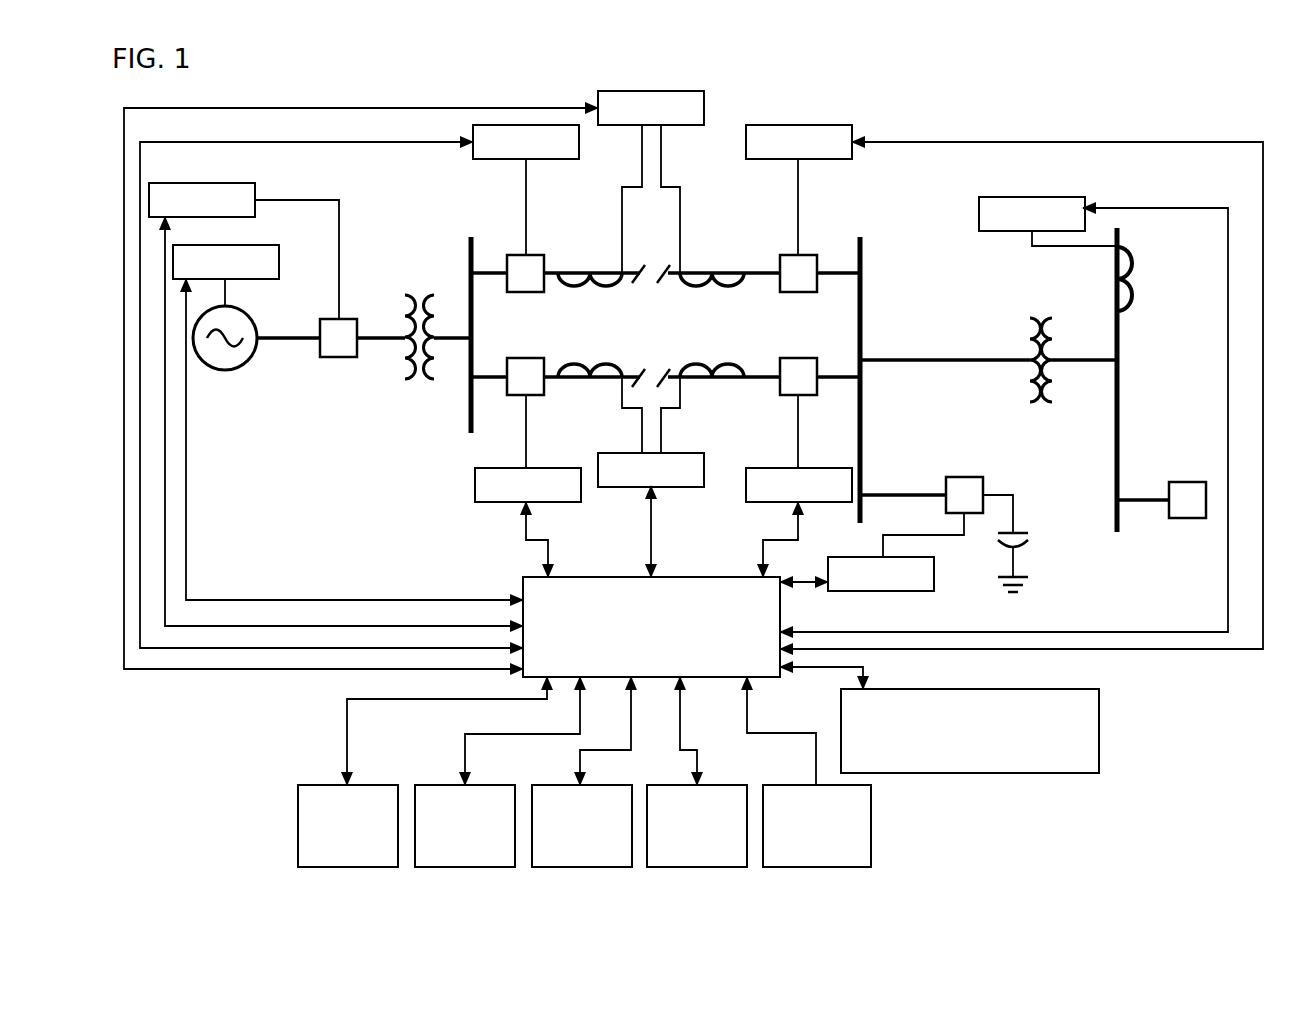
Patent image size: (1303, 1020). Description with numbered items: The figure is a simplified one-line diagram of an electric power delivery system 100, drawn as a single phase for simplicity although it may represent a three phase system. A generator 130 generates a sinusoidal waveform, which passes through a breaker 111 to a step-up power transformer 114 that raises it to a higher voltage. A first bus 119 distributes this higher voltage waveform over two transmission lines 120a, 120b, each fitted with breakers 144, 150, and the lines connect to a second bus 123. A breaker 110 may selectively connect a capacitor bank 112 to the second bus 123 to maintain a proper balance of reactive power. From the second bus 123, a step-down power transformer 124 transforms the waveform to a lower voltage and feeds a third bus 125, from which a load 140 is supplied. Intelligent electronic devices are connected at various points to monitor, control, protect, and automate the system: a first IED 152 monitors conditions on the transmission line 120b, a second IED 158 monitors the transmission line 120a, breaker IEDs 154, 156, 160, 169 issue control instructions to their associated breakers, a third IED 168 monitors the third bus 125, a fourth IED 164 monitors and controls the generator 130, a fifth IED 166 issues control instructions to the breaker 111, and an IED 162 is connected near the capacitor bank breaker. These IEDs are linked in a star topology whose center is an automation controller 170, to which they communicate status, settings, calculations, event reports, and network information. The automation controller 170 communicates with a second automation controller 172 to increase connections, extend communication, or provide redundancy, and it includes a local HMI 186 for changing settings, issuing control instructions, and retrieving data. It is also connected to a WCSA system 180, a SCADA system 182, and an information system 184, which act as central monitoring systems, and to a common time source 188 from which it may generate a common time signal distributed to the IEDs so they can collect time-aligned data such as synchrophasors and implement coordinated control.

The electric power delivery system 100 is at (1106, 106).
The breaker 110 is at (964, 477).
The breaker 111 is at (330, 357).
The capacitor bank 112 is at (1020, 533).
The step-up power transformer 114 is at (417, 380).
The first bus 119 is at (470, 273).
The second transmission line 120a is at (772, 377).
The first transmission line 120b is at (772, 273).
The second bus 123 is at (862, 393).
The step-down power transformer 124 is at (1043, 318).
The third bus 125 is at (1117, 400).
The generator 130 is at (248, 310).
The load 140 is at (1189, 482).
The breaker 144 is at (528, 358).
The breaker 150 is at (799, 358).
The first IED 152 is at (677, 125).
The breaker IED 154 is at (775, 159).
The breaker IED 156 is at (490, 502).
The second IED 158 is at (640, 486).
The breaker IED 160 is at (757, 502).
The IED 162 is at (934, 567).
The fourth IED 164 is at (255, 245).
The fifth IED 166 is at (217, 183).
The third IED 168 is at (1083, 197).
The breaker IED 169 is at (493, 159).
The automation controller 170 is at (634, 650).
The second automation controller 172 is at (953, 757).
The WCSA system 180 is at (347, 867).
The SCADA system 182 is at (465, 867).
The information system 184 is at (580, 867).
The local HMI 186 is at (697, 867).
The common time source 188 is at (816, 868).